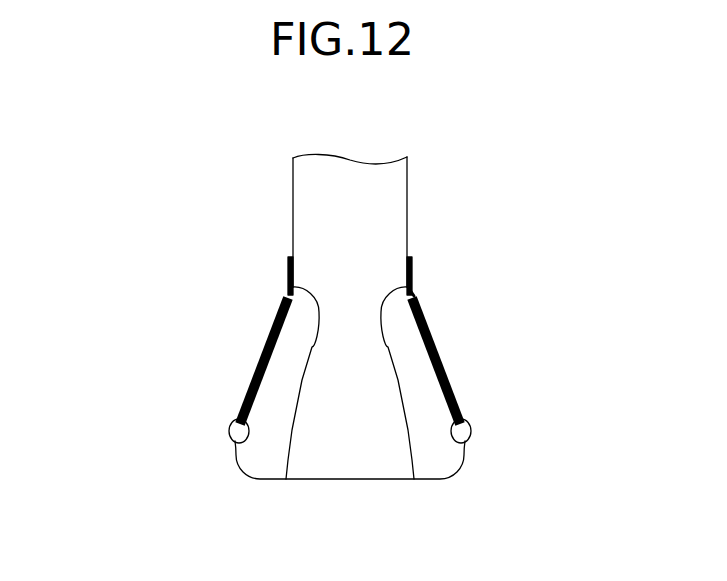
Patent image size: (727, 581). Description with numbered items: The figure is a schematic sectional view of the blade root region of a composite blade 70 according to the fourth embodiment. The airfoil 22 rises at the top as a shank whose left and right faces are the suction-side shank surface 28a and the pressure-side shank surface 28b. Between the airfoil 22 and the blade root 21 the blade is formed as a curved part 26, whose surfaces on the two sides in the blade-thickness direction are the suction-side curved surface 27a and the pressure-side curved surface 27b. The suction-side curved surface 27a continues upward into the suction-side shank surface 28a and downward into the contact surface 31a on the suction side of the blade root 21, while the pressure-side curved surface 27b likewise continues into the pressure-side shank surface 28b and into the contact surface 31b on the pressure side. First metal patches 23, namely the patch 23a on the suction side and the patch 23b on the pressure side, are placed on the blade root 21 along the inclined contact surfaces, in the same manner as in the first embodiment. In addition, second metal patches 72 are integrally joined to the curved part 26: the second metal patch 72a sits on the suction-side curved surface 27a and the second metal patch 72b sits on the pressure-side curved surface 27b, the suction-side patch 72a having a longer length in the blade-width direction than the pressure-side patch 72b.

The composite blade 70 is at (468, 148).
The airfoil 22 is at (407, 180).
The suction-side shank surface 28a is at (293, 228).
The pressure-side shank surface 28b is at (407, 228).
The second metal patches 72 is at (349, 267).
The second metal patch 72a is at (287, 266).
The second metal patch 72b is at (413, 266).
The curved part 26 is at (420, 275).
The first metal patches 23 is at (349, 361).
The first metal patch 23a is at (268, 326).
The first metal patch 23b is at (432, 326).
The contact surface 31a is at (232, 440).
The contact surface 31b is at (468, 440).
The blade root 21 is at (347, 480).
The suction-side curved surface 27a is at (286, 479).
The pressure-side curved surface 27b is at (414, 479).